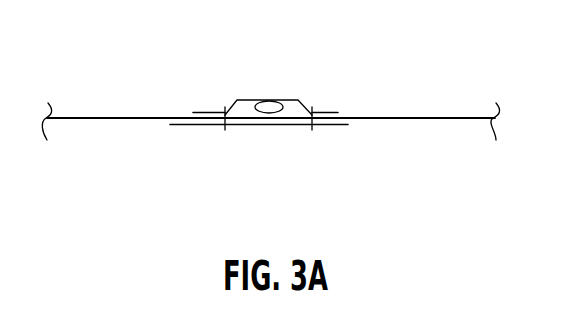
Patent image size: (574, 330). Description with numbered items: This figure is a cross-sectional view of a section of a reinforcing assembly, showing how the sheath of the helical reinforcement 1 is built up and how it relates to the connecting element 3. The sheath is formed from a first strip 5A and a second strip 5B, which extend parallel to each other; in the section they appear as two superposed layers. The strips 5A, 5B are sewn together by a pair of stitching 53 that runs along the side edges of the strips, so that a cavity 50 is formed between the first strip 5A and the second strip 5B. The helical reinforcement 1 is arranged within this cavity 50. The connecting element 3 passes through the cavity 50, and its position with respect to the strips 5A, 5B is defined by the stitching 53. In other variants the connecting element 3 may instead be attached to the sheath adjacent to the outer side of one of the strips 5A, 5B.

The helical reinforcement 1 is at (265, 100).
The connecting element 3 is at (88, 118).
The first strip 5A is at (178, 126).
The second strip 5B is at (298, 99).
The cavity 50 is at (295, 116).
The stitching 53 is at (224, 124).